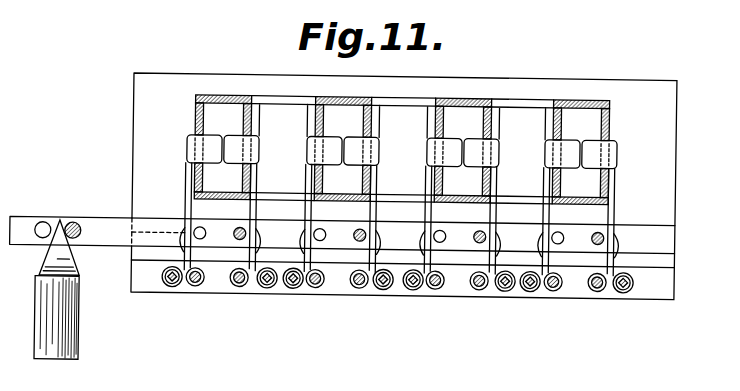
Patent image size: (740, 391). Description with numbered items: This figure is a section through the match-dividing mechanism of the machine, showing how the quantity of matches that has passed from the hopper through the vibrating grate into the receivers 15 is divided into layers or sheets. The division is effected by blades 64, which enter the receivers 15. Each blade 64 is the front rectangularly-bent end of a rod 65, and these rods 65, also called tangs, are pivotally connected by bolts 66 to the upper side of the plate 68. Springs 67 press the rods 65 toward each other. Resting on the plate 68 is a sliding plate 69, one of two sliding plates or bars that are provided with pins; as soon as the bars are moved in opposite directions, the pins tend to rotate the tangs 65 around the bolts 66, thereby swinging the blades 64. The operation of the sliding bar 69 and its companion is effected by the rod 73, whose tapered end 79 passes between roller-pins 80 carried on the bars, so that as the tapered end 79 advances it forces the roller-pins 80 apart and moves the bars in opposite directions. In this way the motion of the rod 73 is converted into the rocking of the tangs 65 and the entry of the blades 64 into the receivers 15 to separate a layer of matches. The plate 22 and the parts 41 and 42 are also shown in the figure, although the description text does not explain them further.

The receiver 15 is at (401, 150).
The plate 22 is at (401, 150).
The rod 41 is at (316, 228).
The rod 42 is at (364, 229).
The blade 64 is at (237, 156).
The rod 65 is at (191, 196).
The bolt 66 is at (242, 285).
The spring 67 is at (181, 249).
The plate 68 is at (333, 281).
The sliding plate 69 is at (635, 231).
The rod 73 is at (82, 322).
The tapered end 79 is at (62, 221).
The roller-pin 80 is at (43, 238).